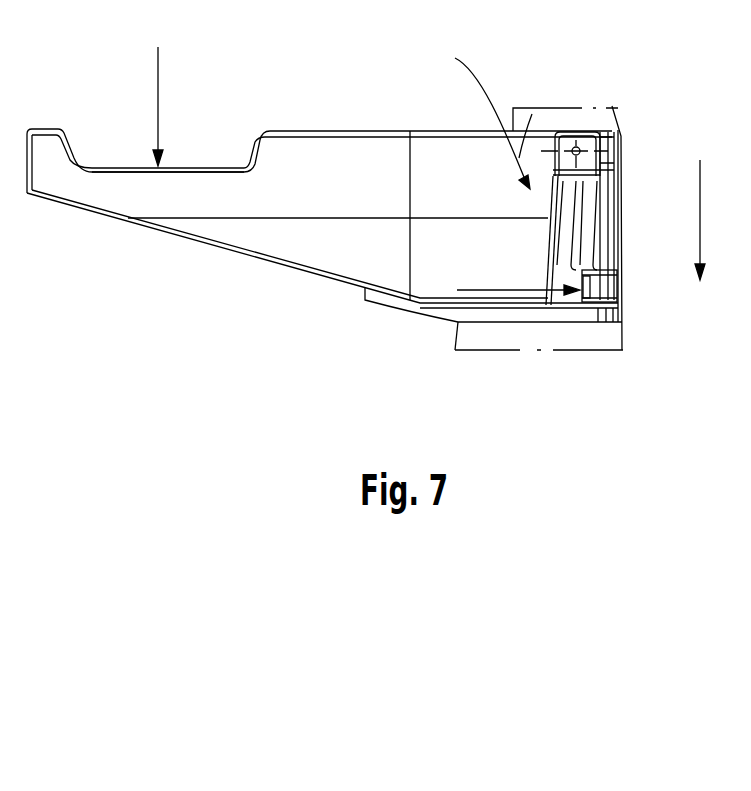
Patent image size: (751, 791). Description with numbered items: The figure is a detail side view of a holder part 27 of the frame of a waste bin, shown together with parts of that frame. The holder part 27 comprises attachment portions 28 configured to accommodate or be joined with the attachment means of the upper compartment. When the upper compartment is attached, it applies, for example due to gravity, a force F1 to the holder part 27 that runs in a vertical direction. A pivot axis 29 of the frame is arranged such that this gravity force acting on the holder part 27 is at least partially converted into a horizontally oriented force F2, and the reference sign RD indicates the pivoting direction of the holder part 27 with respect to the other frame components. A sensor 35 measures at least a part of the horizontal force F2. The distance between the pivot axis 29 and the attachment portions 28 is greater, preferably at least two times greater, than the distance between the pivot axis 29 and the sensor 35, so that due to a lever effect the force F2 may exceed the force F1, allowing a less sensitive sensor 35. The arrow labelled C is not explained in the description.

The holder part 27 is at (228, 297).
The attachment portions 28 is at (191, 166).
The pivot axis 29 is at (577, 131).
The sensor 35 is at (607, 288).
The force F1 is at (158, 88).
The force F2 is at (512, 290).
The pivoting direction RD is at (474, 117).
The direction C is at (700, 185).